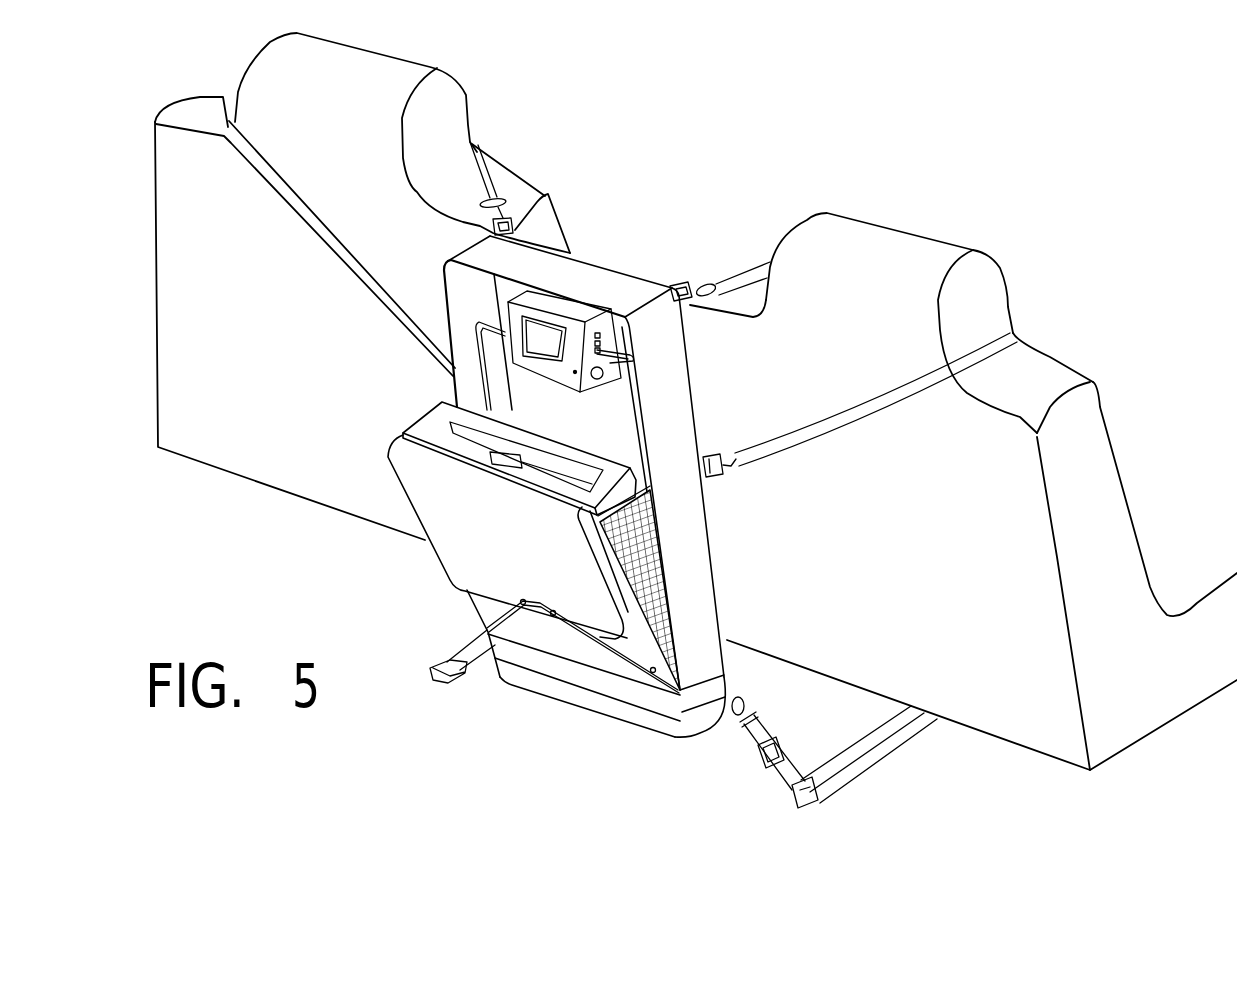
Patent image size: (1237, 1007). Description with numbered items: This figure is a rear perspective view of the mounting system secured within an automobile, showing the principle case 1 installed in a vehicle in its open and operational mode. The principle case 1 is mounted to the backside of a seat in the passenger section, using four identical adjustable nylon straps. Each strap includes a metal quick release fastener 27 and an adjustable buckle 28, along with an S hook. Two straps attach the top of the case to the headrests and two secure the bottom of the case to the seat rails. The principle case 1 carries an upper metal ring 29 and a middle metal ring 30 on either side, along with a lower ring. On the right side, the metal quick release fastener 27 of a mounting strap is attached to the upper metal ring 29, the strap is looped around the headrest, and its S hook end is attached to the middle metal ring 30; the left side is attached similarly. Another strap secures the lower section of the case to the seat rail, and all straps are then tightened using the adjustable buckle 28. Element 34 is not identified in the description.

The principle case 1 is at (583, 257).
The metal quick release fastener 27 is at (1012, 333).
The adjustable buckle 28 is at (733, 451).
The upper metal ring 29 is at (693, 283).
The middle metal ring 30 is at (773, 768).
The seat anchor strap 34 is at (820, 803).